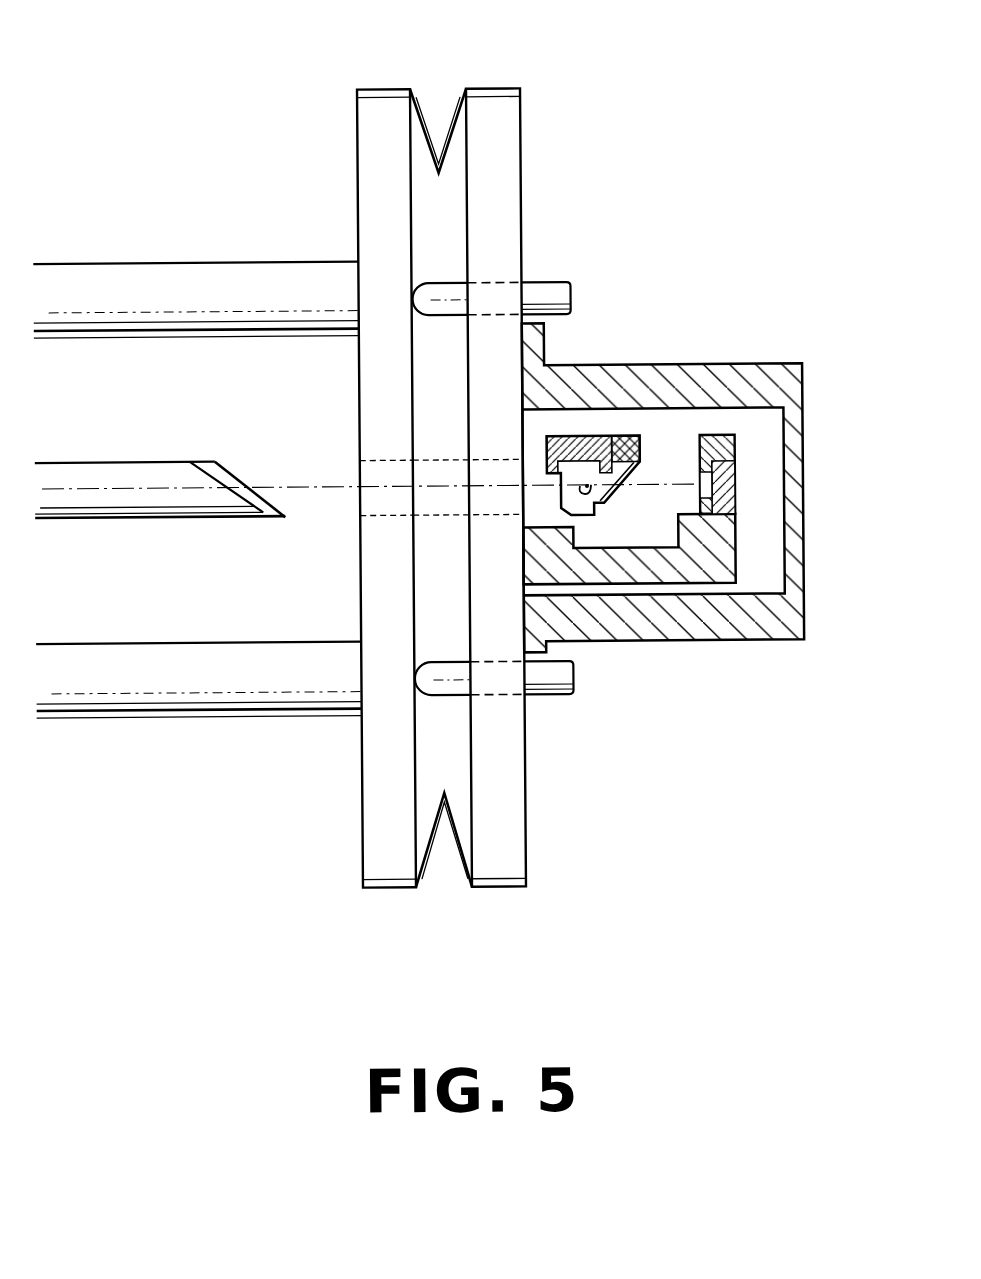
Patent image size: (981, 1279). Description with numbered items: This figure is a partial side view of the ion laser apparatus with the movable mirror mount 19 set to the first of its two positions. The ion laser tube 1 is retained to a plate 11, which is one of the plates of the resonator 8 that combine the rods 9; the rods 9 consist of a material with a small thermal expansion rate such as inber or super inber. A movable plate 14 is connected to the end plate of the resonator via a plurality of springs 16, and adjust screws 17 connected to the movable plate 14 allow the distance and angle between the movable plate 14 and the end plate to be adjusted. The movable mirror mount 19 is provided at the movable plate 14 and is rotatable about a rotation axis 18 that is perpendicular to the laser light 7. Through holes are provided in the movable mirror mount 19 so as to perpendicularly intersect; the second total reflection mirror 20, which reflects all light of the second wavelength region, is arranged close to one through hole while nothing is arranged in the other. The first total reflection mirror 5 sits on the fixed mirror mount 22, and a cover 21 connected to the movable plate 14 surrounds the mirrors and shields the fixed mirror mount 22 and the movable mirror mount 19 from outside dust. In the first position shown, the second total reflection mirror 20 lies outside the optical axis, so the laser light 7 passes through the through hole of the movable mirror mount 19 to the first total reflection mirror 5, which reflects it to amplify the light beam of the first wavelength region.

The ion laser tube 1 is at (88, 459).
The first total reflection mirror 5 is at (738, 472).
The laser light 7 is at (285, 486).
The resonator 8 is at (86, 716).
The rods 9 is at (78, 261).
The plate 11 is at (360, 150).
The movable plate 14 is at (524, 121).
The springs 16 is at (372, 89).
The adjust screws 17 is at (558, 283).
The rotation axis 18 is at (640, 444).
The movable mirror mount 19 is at (604, 497).
The second total reflection mirror 20 is at (587, 437).
The cover 21 is at (674, 366).
The fixed mirror mount 22 is at (737, 558).